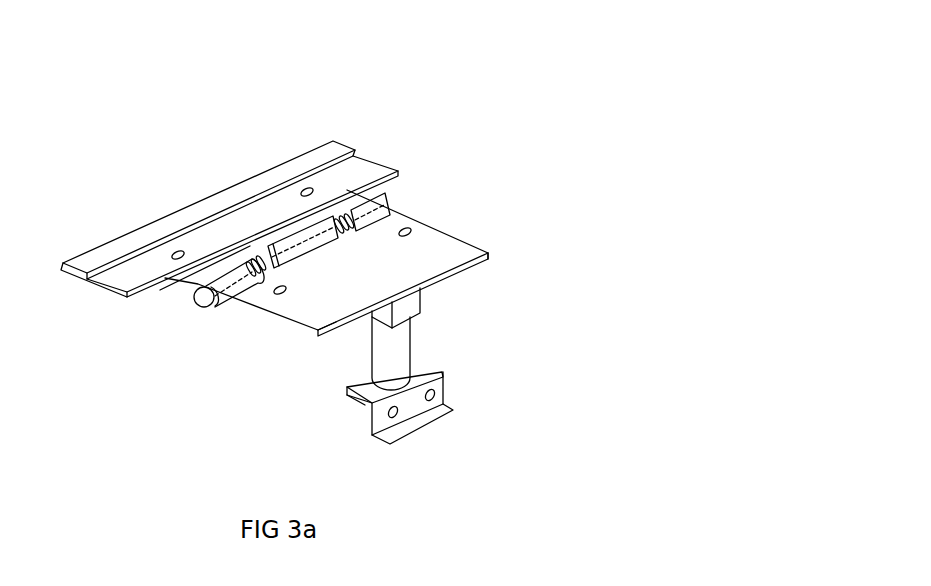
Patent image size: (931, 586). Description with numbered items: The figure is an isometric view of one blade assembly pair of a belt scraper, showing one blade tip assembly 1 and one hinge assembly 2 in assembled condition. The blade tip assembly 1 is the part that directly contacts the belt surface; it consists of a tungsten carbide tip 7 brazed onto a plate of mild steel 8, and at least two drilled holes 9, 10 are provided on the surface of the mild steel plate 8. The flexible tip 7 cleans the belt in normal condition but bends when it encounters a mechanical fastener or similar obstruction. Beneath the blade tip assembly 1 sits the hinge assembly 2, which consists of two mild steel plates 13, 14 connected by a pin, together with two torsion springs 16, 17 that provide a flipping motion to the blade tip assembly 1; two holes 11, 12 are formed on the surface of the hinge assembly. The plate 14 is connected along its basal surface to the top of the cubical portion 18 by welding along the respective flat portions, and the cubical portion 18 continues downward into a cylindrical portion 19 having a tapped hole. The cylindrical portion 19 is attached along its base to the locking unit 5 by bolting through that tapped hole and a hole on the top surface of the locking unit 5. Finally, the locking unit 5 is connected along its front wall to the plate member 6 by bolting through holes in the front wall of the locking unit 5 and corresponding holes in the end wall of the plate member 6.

The blade tip assembly 1 is at (235, 153).
The hinge assembly 2 is at (492, 288).
The locking unit 5 is at (360, 391).
The plate member 6 is at (413, 410).
The tungsten carbide tip 7 is at (333, 147).
The mild steel plate 8 is at (360, 165).
The drilled hole 9 is at (178, 258).
The drilled hole 10 is at (308, 190).
The hole 11 is at (279, 294).
The hole 12 is at (412, 233).
The mild steel plate 13 is at (400, 270).
The mild steel plate 14 is at (345, 327).
The torsion spring 16 is at (380, 218).
The torsion spring 17 is at (248, 274).
The cubical portion 18 is at (420, 315).
The cylindrical portion 19 is at (413, 350).